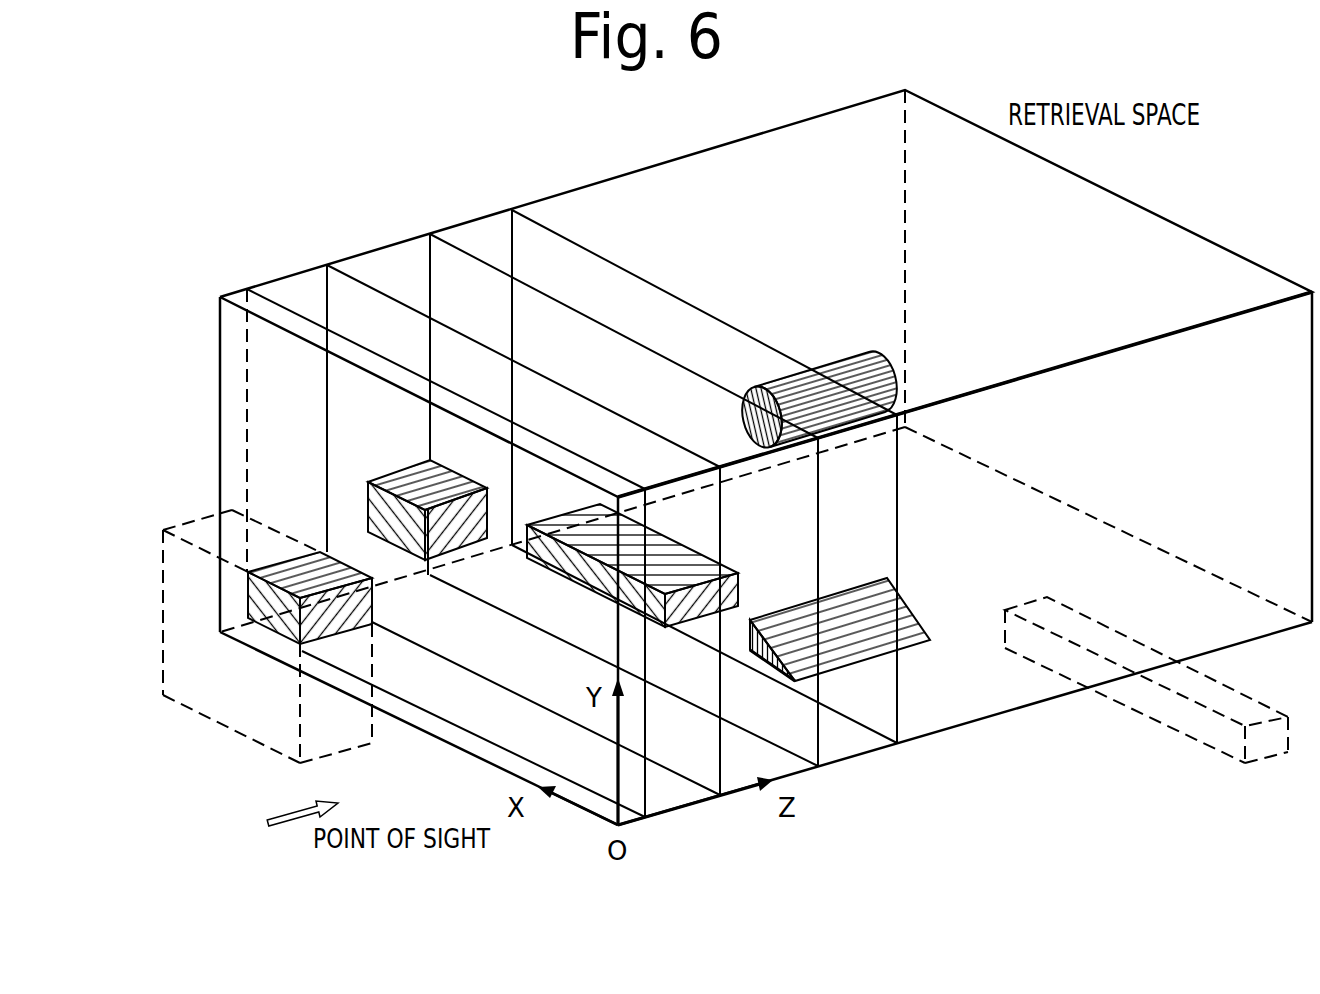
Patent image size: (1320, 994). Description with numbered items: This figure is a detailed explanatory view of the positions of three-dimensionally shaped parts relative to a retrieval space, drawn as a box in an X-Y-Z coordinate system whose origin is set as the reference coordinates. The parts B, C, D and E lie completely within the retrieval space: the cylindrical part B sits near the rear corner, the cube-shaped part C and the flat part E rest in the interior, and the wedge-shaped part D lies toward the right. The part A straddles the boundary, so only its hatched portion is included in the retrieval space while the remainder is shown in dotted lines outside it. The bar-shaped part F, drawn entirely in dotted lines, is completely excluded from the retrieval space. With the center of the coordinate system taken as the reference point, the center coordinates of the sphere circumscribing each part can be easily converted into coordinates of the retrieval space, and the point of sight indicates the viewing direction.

The part A is at (232, 730).
The part B is at (829, 365).
The part C is at (392, 471).
The part D is at (906, 599).
The part E is at (730, 558).
The part F is at (1232, 686).